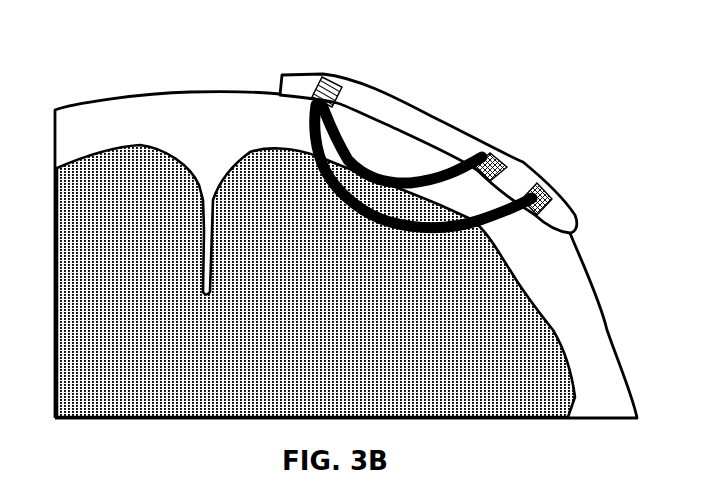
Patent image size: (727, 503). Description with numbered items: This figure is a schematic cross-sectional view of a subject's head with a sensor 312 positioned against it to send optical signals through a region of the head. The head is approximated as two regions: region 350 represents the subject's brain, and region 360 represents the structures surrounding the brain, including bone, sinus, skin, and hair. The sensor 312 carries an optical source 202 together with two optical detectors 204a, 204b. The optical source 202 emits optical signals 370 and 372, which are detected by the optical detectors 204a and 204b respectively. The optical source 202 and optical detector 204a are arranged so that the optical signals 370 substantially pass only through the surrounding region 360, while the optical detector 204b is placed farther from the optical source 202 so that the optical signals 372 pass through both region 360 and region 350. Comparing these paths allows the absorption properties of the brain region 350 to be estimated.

The sensor 312 is at (437, 112).
The optical source 202 is at (331, 77).
The optical detector 204a is at (497, 158).
The optical detector 204b is at (542, 189).
The region 350 is at (301, 293).
The region 360 is at (240, 136).
The optical signals 370 is at (408, 163).
The optical signals 372 is at (443, 242).